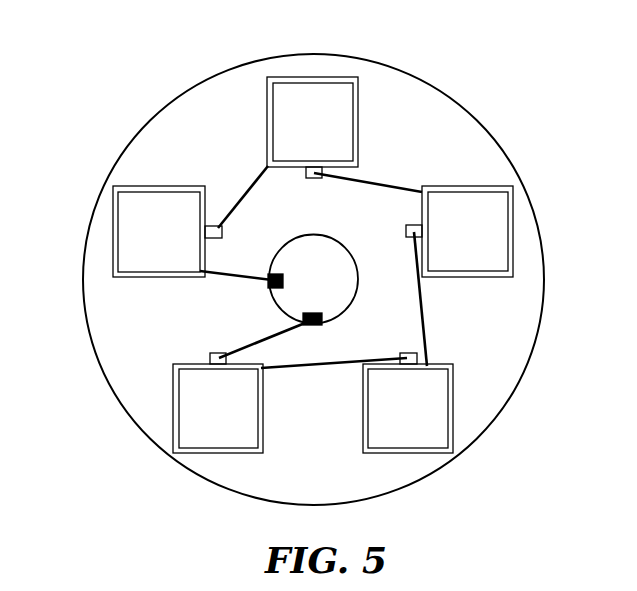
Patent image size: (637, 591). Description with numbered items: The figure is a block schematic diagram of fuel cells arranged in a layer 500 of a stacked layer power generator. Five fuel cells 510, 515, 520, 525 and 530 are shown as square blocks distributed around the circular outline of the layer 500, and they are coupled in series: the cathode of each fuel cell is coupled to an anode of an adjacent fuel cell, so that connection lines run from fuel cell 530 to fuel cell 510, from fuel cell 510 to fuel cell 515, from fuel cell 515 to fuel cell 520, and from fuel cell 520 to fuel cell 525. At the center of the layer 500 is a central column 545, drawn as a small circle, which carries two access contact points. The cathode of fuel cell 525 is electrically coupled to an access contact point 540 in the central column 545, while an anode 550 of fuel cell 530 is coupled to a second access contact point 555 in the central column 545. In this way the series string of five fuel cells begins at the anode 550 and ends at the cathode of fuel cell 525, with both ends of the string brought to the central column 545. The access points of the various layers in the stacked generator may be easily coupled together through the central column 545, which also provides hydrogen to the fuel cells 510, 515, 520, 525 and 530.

The layer 500 is at (108, 45).
The fuel cell 510 is at (307, 95).
The fuel cell 515 is at (493, 217).
The fuel cell 520 is at (421, 436).
The fuel cell 525 is at (207, 435).
The fuel cell 530 is at (130, 230).
The access contact point 540 is at (316, 325).
The central column 545 is at (342, 242).
The anode 550 is at (178, 276).
The access contact point 555 is at (272, 275).